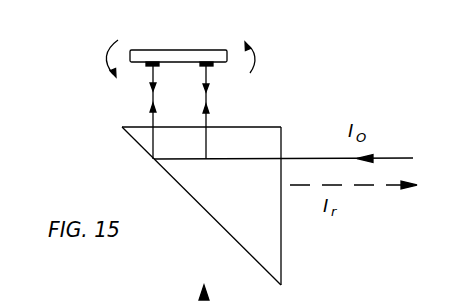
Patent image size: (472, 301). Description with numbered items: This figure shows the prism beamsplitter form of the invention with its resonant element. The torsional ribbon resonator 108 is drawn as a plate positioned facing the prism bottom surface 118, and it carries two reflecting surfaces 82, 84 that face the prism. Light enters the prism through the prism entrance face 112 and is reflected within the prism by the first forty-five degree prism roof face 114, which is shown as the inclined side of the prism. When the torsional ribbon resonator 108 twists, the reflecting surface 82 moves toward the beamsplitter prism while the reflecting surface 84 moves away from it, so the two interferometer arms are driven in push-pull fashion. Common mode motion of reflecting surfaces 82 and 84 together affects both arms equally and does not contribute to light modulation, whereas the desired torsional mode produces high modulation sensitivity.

The torsional ribbon resonator 108 is at (175, 50).
The reflecting surface 82 is at (145, 67).
The reflecting surface 84 is at (213, 66).
The prism bottom surface 118 is at (279, 125).
The prism entrance face 112 is at (282, 265).
The first 45-degree prism roof face 114 is at (225, 232).